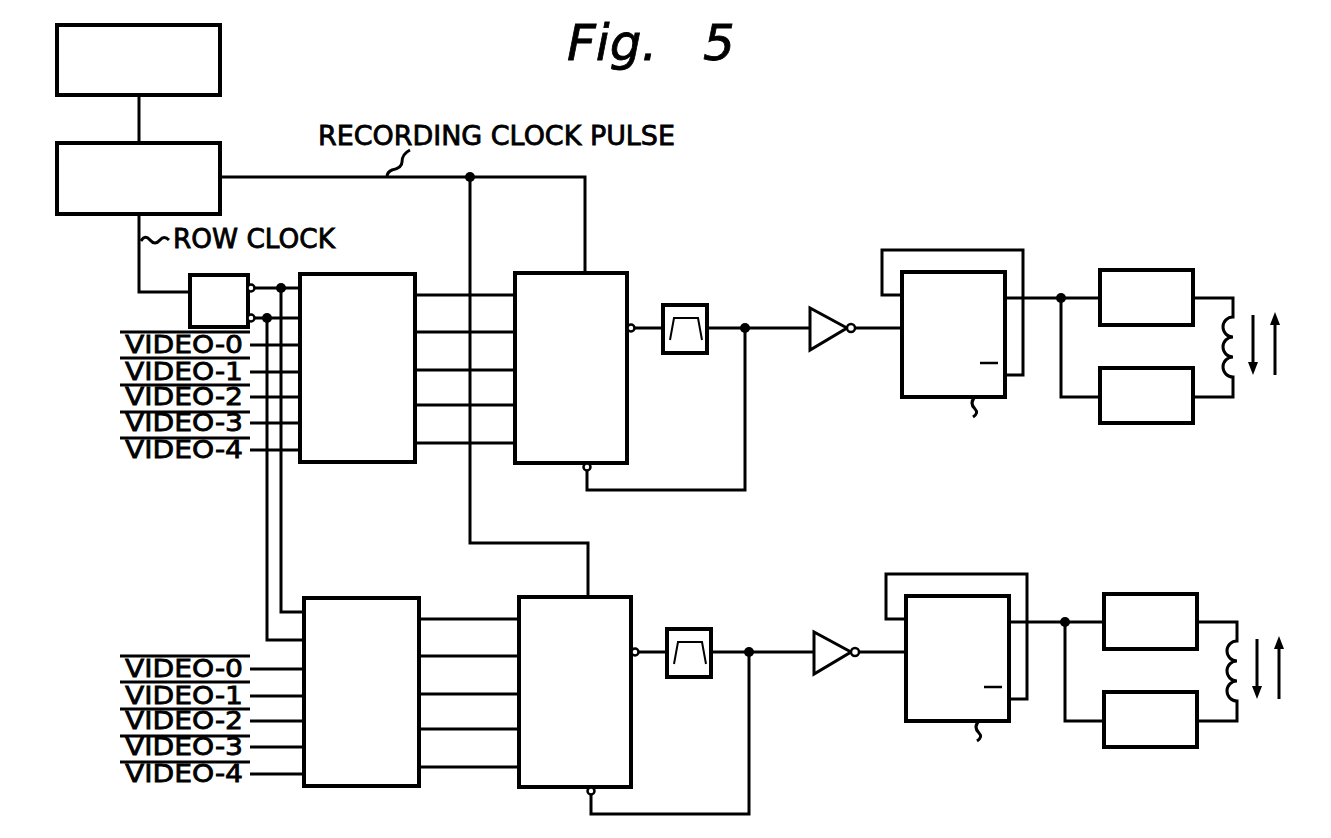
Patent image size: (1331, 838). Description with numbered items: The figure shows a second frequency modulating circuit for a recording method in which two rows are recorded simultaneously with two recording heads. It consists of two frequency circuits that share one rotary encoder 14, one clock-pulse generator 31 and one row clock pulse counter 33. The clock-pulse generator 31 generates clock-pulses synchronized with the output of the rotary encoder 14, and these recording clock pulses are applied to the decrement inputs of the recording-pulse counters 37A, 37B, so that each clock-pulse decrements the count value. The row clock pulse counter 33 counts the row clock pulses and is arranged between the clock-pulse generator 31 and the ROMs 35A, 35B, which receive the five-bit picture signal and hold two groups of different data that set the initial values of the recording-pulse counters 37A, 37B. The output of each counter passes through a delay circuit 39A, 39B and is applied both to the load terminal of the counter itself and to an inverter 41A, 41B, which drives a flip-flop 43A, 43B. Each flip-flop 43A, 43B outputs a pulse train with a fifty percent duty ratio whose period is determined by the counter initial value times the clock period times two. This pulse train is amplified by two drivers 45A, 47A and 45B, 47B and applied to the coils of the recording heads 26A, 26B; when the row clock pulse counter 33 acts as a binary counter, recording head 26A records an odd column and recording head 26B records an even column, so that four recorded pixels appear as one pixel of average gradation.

The rotary encoder 14 is at (221, 52).
The clock-pulse generator 31 is at (220, 146).
The row clock pulse counter 33 is at (190, 313).
The ROM 35A is at (385, 462).
The ROM 35B is at (362, 713).
The recording-pulse counter 37A is at (537, 463).
The recording-pulse counter 37B is at (577, 711).
The delay circuit 39A is at (700, 305).
The delay circuit 39B is at (698, 630).
The inverter 41A is at (830, 308).
The inverter 41B is at (859, 627).
The flip-flop 43A is at (902, 367).
The flip-flop 43B is at (929, 667).
The driver 45A is at (1170, 270).
The driver 45B is at (1153, 599).
The driver 47A is at (1175, 423).
The driver 47B is at (1152, 743).
The recording head 26A is at (1240, 298).
The recording head 26B is at (1245, 650).